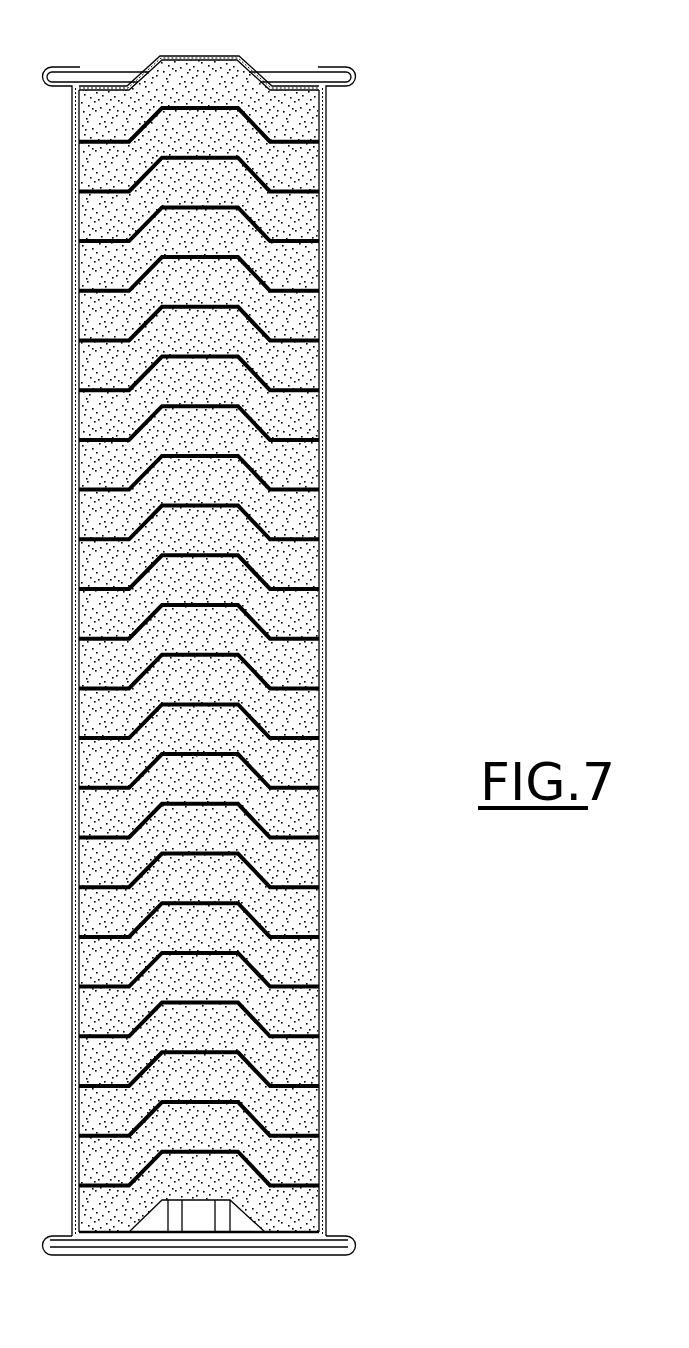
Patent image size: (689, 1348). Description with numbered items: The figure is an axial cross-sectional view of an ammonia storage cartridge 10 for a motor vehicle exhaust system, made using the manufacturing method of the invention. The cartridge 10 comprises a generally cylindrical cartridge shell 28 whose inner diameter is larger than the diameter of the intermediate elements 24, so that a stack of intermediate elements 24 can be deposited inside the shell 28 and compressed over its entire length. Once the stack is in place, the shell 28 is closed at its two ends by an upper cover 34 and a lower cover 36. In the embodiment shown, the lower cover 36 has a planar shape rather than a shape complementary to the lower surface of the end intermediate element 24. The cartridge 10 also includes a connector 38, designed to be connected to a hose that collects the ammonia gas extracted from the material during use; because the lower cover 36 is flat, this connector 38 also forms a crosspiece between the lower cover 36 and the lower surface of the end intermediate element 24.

The ammonia storage cartridge 10 is at (413, 394).
The intermediate elements 24 is at (303, 117).
The cartridge shell 28 is at (323, 463).
The upper cover 34 is at (254, 70).
The lower cover 36 is at (313, 1238).
The connector 38 is at (176, 1218).